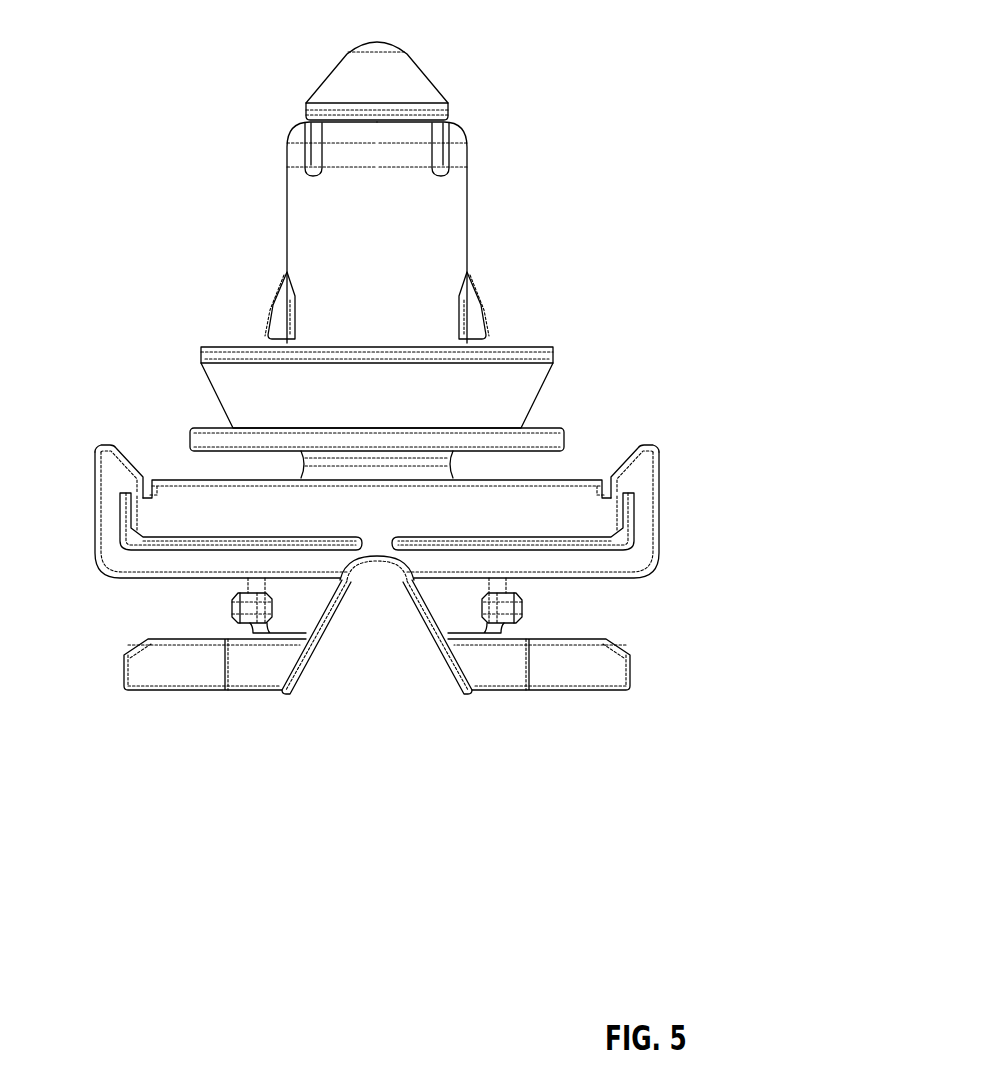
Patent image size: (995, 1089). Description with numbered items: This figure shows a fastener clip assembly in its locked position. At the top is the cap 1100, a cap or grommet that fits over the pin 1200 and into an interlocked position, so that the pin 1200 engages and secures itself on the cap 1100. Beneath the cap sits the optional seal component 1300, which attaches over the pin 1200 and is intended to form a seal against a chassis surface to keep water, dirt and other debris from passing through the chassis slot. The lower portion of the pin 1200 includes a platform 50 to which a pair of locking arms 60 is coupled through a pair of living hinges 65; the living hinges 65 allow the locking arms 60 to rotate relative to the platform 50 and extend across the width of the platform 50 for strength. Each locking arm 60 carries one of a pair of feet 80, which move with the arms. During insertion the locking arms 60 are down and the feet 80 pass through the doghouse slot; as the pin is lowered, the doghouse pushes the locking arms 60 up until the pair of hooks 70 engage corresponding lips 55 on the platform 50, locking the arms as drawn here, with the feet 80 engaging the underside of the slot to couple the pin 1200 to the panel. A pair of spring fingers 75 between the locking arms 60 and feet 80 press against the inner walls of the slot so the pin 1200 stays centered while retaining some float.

The pin 1200 is at (400, 80).
The cap 1100 is at (417, 222).
The seal component 1300 is at (492, 380).
The platform 50 is at (548, 503).
The lips 55 is at (130, 508).
The locking arms 60 is at (103, 568).
The living hinges 65 is at (345, 562).
The hooks 70 is at (112, 473).
The spring fingers 75 is at (235, 607).
The feet 80 is at (165, 675).